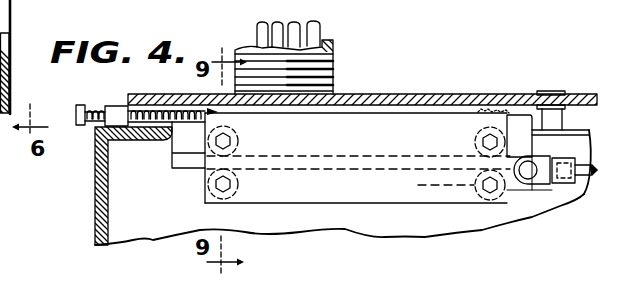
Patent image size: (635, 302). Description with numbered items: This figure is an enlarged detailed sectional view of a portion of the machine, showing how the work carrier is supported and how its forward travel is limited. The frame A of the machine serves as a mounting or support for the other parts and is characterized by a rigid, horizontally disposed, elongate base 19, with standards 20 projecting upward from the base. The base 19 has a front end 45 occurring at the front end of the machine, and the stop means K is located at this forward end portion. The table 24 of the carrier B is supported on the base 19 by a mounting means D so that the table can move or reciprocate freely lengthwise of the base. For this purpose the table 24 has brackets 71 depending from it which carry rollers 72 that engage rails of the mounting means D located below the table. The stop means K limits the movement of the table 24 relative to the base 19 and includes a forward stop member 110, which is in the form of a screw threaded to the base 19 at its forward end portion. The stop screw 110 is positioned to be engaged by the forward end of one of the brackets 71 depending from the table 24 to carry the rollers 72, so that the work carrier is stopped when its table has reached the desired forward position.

The stop means K is at (96, 103).
The carrier B is at (159, 90).
The table 24 is at (478, 94).
The standards 20 is at (333, 66).
The forward stop member 110 is at (143, 123).
The frame A is at (88, 213).
The front end 45 is at (96, 179).
The base 19 is at (88, 236).
The brackets 71 is at (361, 126).
The mounting means D is at (197, 188).
The rollers 72 is at (418, 185).